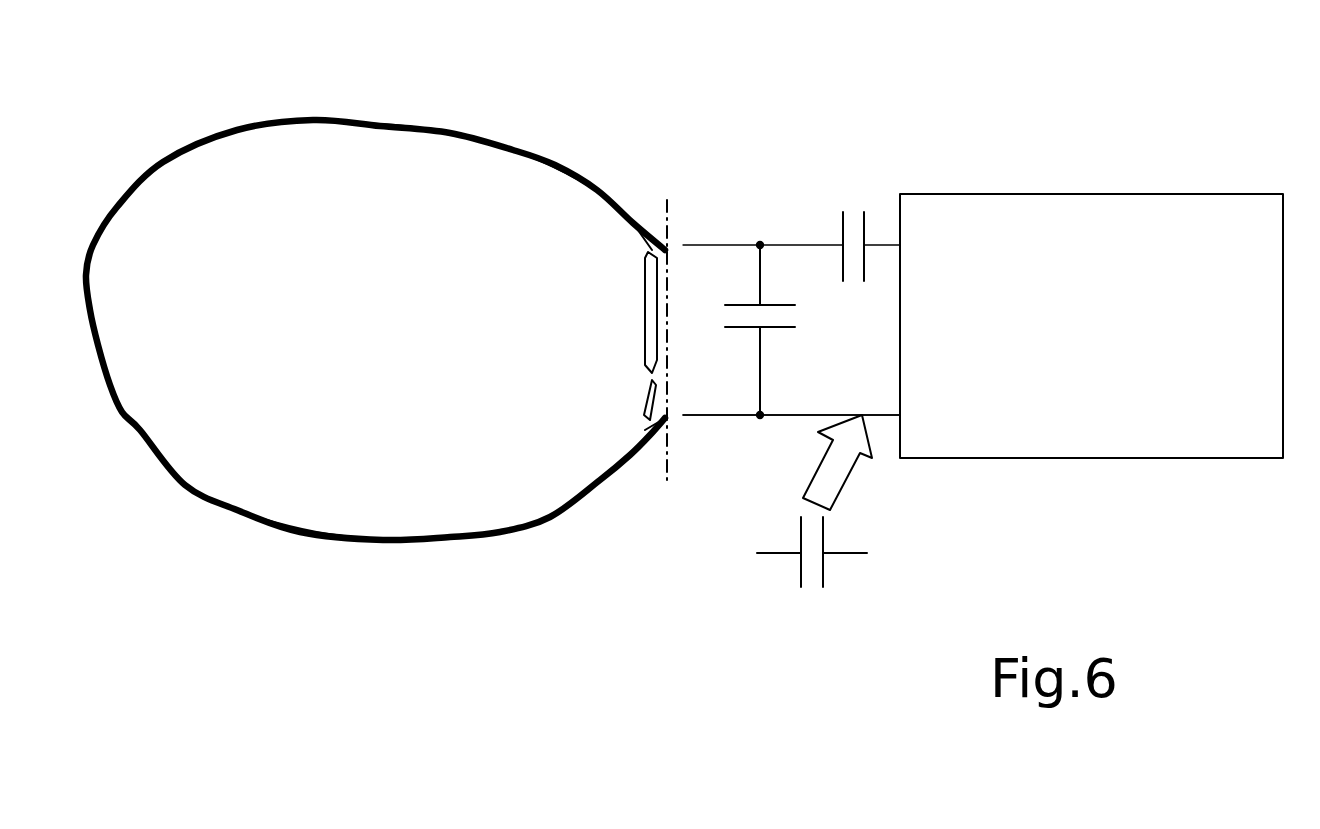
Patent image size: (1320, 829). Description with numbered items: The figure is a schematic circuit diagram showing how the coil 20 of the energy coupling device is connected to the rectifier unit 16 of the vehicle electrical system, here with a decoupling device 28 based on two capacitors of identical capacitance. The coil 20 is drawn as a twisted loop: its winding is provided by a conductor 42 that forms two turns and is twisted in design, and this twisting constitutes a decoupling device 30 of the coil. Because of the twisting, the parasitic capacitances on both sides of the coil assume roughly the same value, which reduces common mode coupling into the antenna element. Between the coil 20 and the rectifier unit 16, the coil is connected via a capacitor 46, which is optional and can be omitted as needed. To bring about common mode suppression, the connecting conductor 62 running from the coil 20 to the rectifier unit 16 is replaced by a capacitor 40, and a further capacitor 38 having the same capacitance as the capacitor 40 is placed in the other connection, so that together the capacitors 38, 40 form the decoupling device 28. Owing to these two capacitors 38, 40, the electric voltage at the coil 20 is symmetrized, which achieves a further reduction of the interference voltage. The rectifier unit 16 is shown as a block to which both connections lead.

The rectifier unit 16 is at (1112, 194).
The coil 20 is at (115, 415).
The decoupling device 28 is at (807, 618).
The decoupling device 30 is at (243, 513).
The capacitor 38 is at (838, 225).
The capacitor 40 is at (800, 565).
The conductor 42 is at (510, 145).
The capacitor 46 is at (760, 378).
The connecting conductor 62 is at (788, 416).